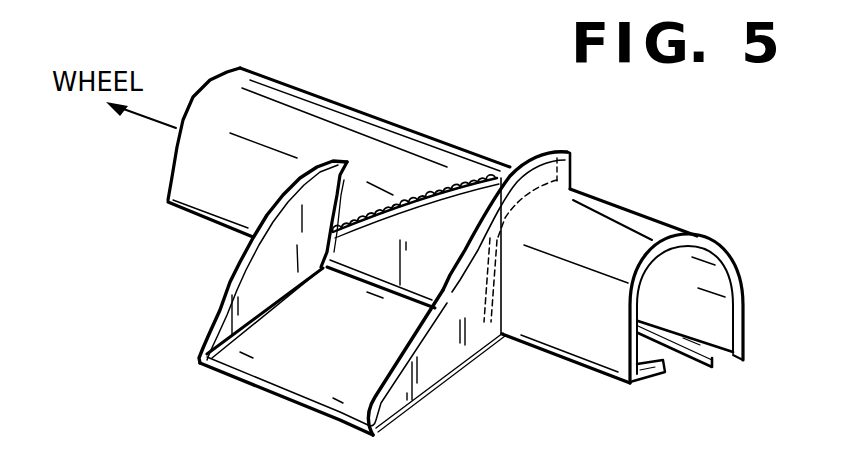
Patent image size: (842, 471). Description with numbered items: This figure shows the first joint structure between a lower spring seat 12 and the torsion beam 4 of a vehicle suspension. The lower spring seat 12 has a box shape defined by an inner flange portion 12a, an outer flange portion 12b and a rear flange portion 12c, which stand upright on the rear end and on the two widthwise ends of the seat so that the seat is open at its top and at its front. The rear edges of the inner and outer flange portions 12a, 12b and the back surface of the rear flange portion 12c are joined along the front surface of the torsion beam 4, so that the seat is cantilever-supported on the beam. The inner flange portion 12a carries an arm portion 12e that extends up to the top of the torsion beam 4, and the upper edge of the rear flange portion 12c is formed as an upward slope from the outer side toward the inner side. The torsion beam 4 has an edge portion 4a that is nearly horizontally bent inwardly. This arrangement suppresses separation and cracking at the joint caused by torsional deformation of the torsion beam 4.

The torsion beam 4 is at (397, 128).
The edge portion of the torsion beam 4a is at (660, 376).
The lower spring seat 12 is at (400, 276).
The inner flange portion 12a is at (415, 330).
The outer flange portion 12b is at (215, 310).
The rear flange portion 12c is at (456, 200).
The arm portion 12e is at (572, 157).